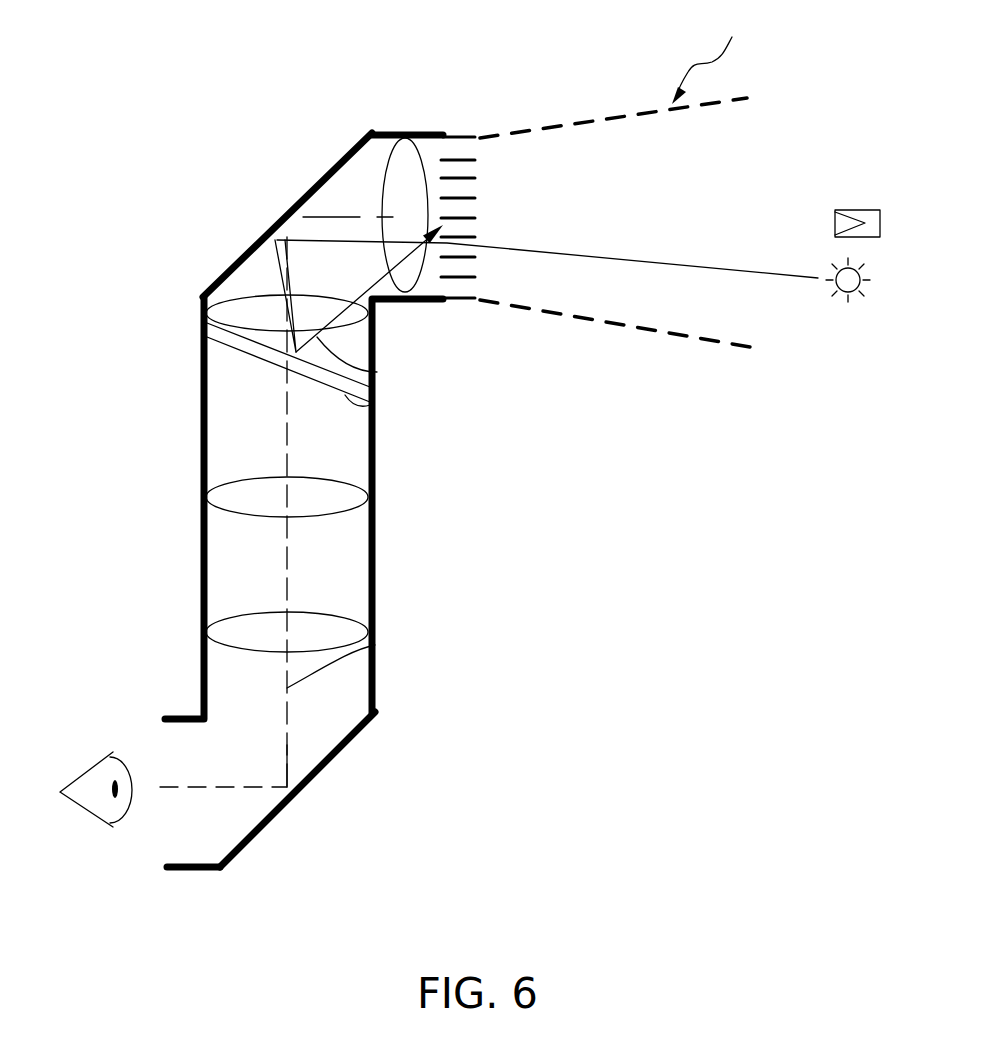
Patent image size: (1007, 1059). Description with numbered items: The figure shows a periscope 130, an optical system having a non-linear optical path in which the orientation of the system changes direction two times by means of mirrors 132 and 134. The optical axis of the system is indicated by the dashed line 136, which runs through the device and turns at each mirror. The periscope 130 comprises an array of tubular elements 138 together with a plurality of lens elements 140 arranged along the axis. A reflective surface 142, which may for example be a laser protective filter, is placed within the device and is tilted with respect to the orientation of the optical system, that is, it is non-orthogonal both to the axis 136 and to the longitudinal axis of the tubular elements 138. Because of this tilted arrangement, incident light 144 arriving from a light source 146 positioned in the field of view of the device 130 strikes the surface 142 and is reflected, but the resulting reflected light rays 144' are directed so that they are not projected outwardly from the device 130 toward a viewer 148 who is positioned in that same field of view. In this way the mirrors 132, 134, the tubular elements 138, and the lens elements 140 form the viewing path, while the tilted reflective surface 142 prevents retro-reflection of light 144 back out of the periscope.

The periscope 130 is at (414, 551).
The mirror 132 is at (338, 753).
The mirror 134 is at (318, 183).
The optical axis 136 is at (375, 645).
The array of tubular elements 138 is at (462, 182).
The lens elements 140 is at (403, 147).
The reflective surface 142 is at (378, 414).
The incident light 144 is at (547, 245).
The reflected light rays 144' is at (442, 318).
The light source 146 is at (863, 290).
The viewer 148 is at (867, 208).